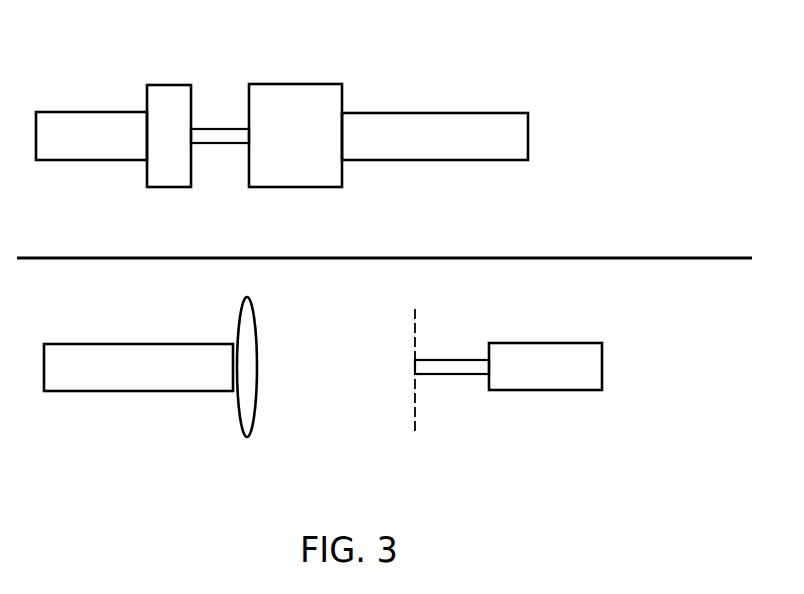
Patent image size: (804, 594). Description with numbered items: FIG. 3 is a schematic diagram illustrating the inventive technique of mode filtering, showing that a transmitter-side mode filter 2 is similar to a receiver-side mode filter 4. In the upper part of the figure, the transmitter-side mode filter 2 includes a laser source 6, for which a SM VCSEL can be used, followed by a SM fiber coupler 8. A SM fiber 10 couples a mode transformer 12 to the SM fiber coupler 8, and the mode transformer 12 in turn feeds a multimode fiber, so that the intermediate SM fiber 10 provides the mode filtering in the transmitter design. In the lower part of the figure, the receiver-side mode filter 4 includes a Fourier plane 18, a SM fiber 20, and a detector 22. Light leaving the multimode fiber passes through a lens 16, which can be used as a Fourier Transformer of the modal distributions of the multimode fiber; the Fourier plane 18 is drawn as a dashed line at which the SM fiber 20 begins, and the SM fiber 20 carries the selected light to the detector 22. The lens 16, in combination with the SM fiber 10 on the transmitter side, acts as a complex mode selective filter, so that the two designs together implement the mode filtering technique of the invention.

The transmitter-side mode filter 2 is at (500, 36).
The receiver-side mode filter 4 is at (488, 296).
The laser source 6 is at (92, 160).
The SM fiber coupler 8 is at (162, 94).
The SM fiber 10 is at (219, 152).
The mode transformer 12 is at (309, 175).
The lens 16 is at (260, 426).
The Fourier plane 18 is at (424, 425).
The SM fiber 20 is at (455, 375).
The detector 22 is at (547, 391).